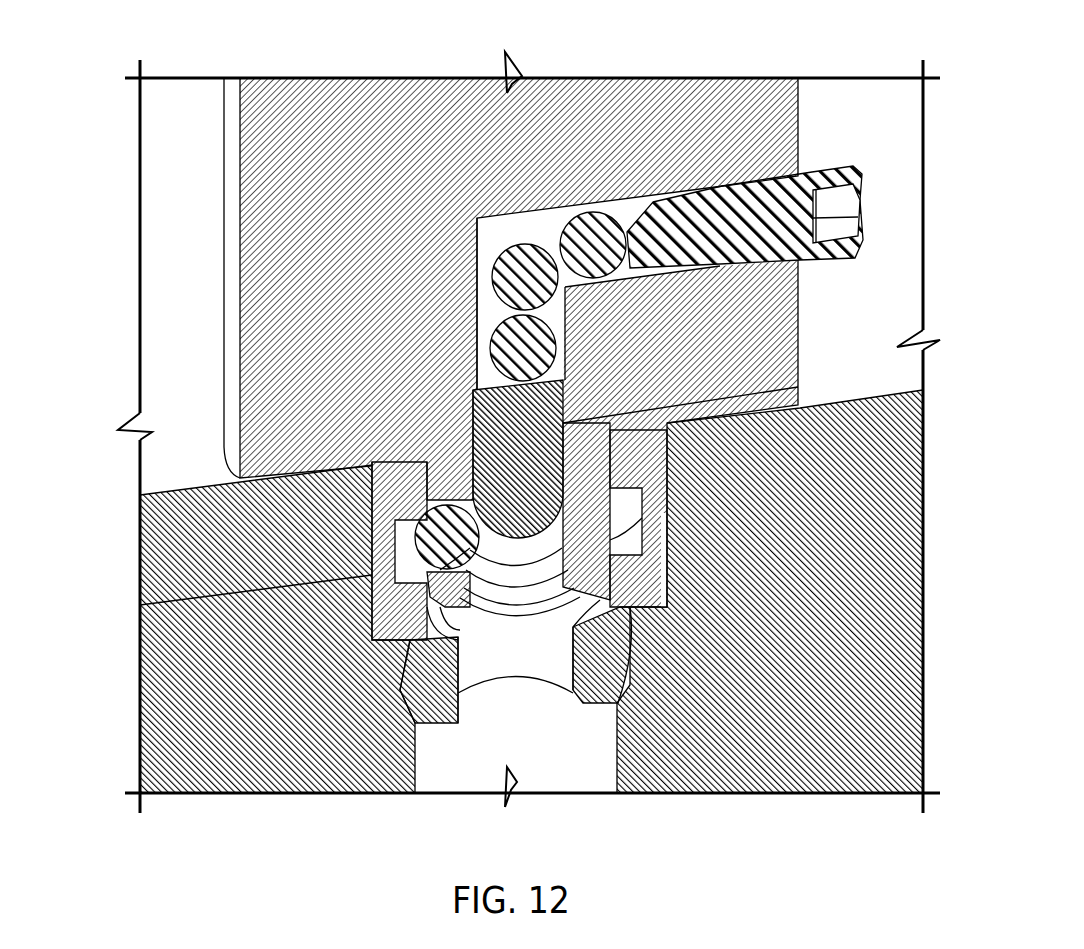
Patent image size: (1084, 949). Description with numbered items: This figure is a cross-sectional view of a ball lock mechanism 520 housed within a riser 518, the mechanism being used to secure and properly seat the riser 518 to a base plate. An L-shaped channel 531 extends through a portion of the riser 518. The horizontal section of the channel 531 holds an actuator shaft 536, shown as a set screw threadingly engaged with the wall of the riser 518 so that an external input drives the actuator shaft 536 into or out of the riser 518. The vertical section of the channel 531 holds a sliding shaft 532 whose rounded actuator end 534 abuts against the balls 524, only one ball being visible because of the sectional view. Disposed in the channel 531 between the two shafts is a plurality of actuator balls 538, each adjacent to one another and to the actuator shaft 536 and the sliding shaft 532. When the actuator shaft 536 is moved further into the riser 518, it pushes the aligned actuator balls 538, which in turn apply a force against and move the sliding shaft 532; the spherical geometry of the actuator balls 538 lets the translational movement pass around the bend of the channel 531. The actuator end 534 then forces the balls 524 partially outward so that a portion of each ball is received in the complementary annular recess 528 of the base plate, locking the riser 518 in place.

The riser 518 is at (305, 200).
The ball lock mechanism 520 is at (450, 297).
The L-shaped channel 531 is at (503, 228).
The actuator balls 538 is at (567, 224).
The actuator shaft 536 is at (828, 170).
The sliding shaft 532 is at (797, 381).
The annular recess 528 is at (141, 605).
The balls 524 is at (480, 542).
The actuator end 534 is at (523, 540).